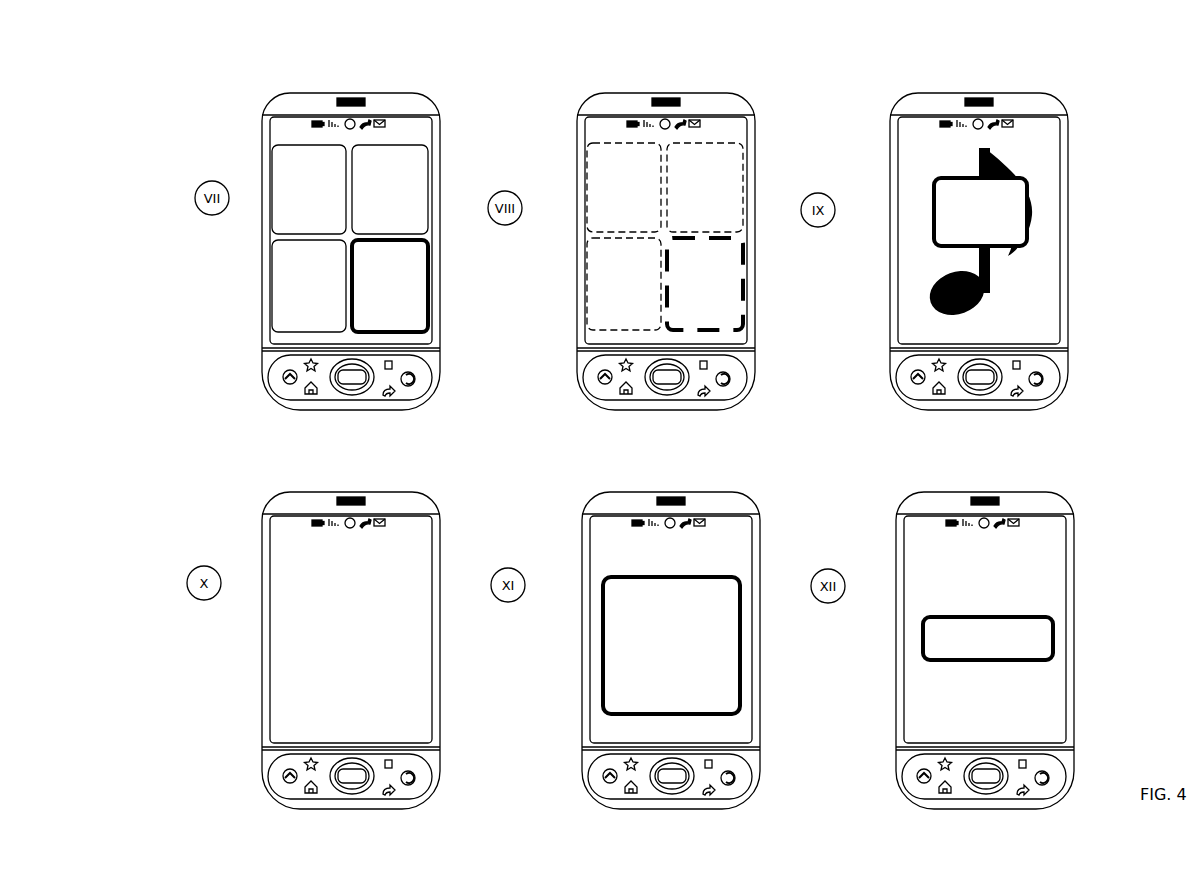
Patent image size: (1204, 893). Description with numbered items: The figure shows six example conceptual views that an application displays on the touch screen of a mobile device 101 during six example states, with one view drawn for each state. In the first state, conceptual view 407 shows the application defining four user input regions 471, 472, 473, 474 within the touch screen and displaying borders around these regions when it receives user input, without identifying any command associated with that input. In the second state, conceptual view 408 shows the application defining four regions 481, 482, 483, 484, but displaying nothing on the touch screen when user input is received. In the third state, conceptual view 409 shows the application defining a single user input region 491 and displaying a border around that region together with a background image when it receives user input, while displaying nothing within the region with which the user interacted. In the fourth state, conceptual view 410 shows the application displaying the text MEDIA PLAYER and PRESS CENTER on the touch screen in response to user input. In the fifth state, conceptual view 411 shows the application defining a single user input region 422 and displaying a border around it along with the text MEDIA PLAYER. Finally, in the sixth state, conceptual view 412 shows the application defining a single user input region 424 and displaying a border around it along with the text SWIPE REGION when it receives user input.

The mobile device 101 is at (268, 108).
The conceptual view 407 is at (353, 93).
The conceptual view 408 is at (666, 93).
The conceptual view 409 is at (981, 93).
The conceptual view 410 is at (353, 492).
The conceptual view 411 is at (666, 492).
The conceptual view 412 is at (981, 492).
The user input region 471 is at (310, 145).
The user input region 472 is at (388, 145).
The user input region 473 is at (398, 337).
The user input region 474 is at (310, 333).
The region 481 is at (625, 144).
The region 482 is at (700, 144).
The region 483 is at (710, 336).
The region 484 is at (625, 332).
The user input region 491 is at (1030, 211).
The user input region 422 is at (740, 638).
The user input region 424 is at (1053, 641).